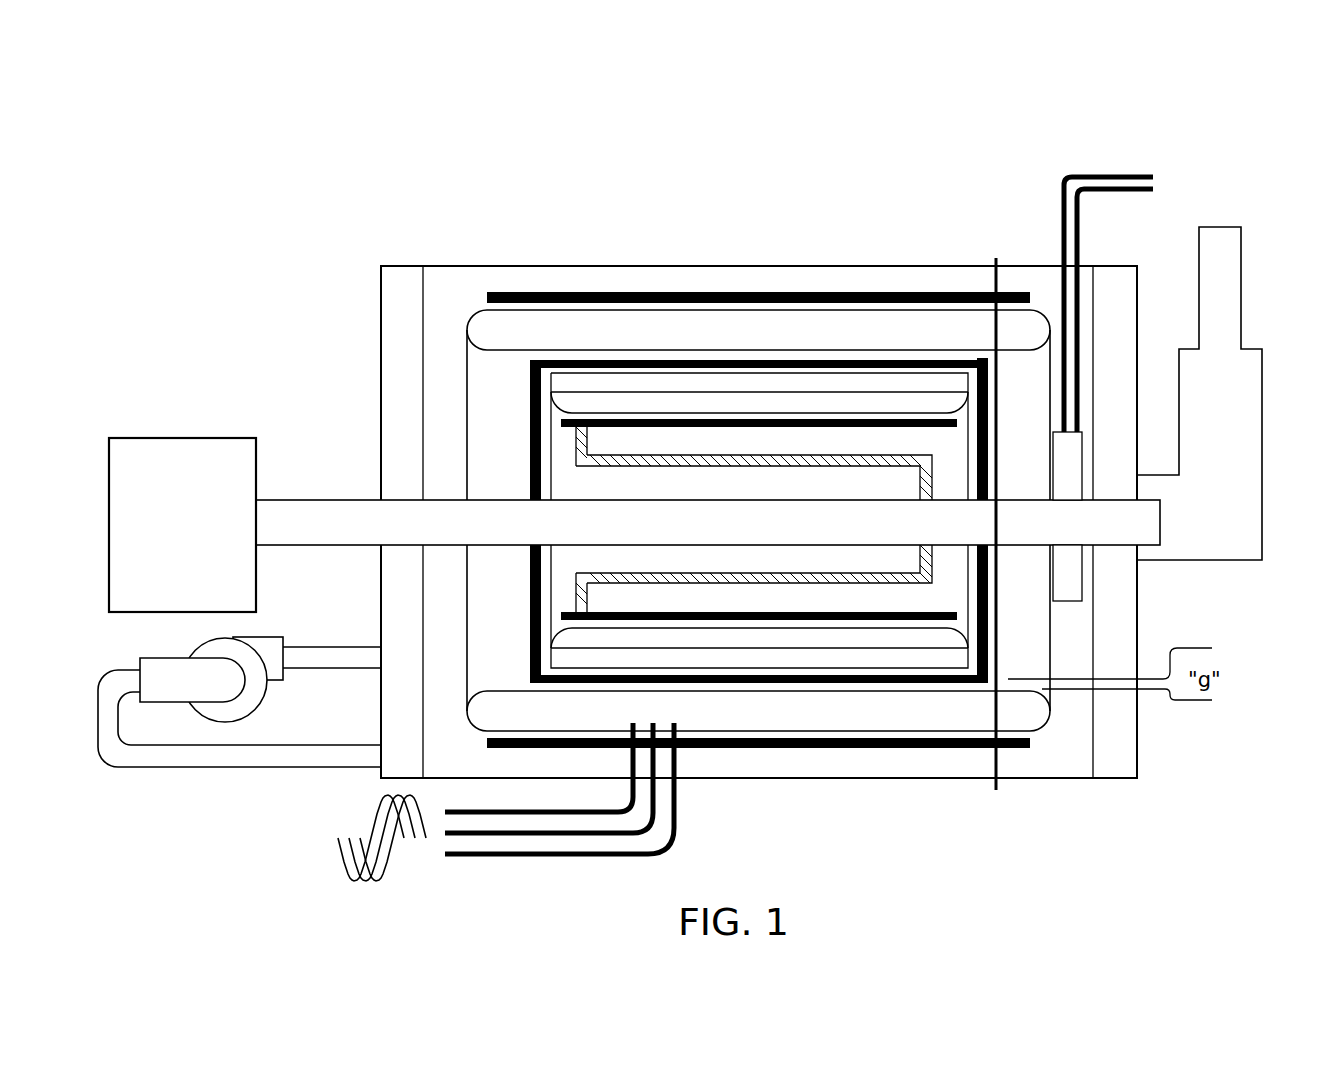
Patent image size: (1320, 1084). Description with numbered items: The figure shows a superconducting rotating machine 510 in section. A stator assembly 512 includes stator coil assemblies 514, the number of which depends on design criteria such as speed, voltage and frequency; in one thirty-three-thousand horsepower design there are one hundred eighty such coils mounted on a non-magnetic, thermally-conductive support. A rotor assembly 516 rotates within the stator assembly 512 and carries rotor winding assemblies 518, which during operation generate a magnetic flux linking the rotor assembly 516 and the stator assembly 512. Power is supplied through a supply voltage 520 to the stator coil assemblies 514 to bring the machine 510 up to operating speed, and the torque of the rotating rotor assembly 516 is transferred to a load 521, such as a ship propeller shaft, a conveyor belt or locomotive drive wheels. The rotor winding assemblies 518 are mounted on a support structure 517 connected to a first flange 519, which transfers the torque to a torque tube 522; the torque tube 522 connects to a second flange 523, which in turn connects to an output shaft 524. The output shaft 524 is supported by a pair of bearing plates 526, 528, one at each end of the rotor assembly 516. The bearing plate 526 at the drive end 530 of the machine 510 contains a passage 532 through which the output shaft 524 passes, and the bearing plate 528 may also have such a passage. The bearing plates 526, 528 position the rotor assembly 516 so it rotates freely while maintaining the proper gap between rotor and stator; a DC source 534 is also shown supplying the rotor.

The superconducting rotating machine 510 is at (183, 139).
The stator assembly 512 is at (636, 280).
The stator coil assemblies 514 is at (823, 330).
The rotor assembly 516 is at (803, 598).
The support structure 517 is at (878, 618).
The rotor winding assemblies 518 is at (726, 637).
The first flange 519 is at (580, 450).
The supply voltage 520 is at (338, 857).
The load 521 is at (180, 438).
The torque tube 522 is at (727, 455).
The second flange 523 is at (933, 478).
The output shaft 524 is at (289, 500).
The bearing plate 526 is at (398, 265).
The bearing plate 528 is at (1137, 732).
The drive end 530 is at (321, 215).
The passage 532 is at (390, 512).
The DC source 534 is at (1183, 170).